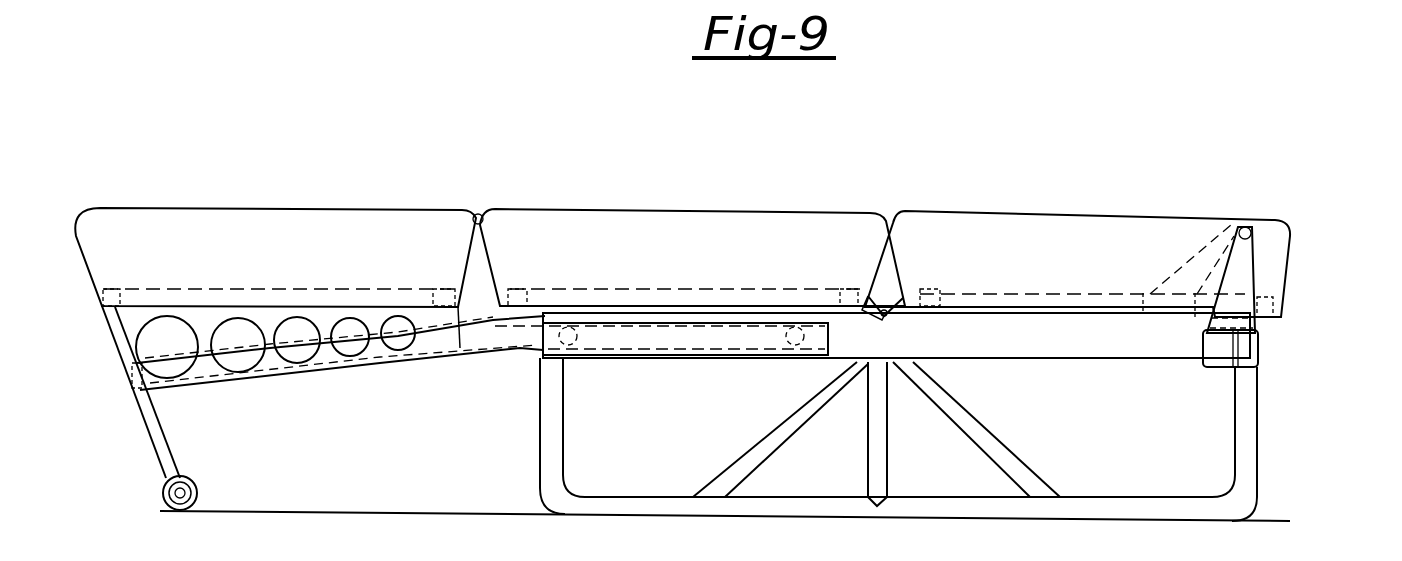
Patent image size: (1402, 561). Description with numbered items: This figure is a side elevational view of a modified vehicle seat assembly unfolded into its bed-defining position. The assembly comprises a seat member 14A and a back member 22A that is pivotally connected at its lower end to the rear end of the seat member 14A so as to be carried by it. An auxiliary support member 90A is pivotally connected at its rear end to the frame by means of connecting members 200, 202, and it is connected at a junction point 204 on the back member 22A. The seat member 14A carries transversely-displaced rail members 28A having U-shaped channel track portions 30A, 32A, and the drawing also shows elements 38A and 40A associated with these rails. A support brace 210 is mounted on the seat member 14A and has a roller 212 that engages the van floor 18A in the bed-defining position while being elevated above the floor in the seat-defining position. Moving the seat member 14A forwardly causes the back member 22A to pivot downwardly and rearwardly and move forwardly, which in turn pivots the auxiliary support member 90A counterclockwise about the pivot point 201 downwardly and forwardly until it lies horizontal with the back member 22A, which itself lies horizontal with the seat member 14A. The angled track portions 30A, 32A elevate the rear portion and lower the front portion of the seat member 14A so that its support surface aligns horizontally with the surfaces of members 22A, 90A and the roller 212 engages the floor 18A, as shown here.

The seat member 14A is at (240, 208).
The back member 22A is at (563, 209).
The auxiliary support member 90A is at (1015, 212).
The connecting member 200 is at (1195, 293).
The pivot point 201 is at (1252, 225).
The connecting member 202 is at (1282, 287).
The junction point 204 is at (887, 318).
The support brace 210 is at (146, 436).
The roller 212 is at (162, 492).
The van floor 18A is at (285, 511).
The rail members 28A is at (343, 365).
The U-shaped channel track portion 30A is at (420, 342).
The U-shaped channel track portion 32A is at (652, 342).
The roller 38A is at (575, 348).
The roller 40A is at (790, 352).